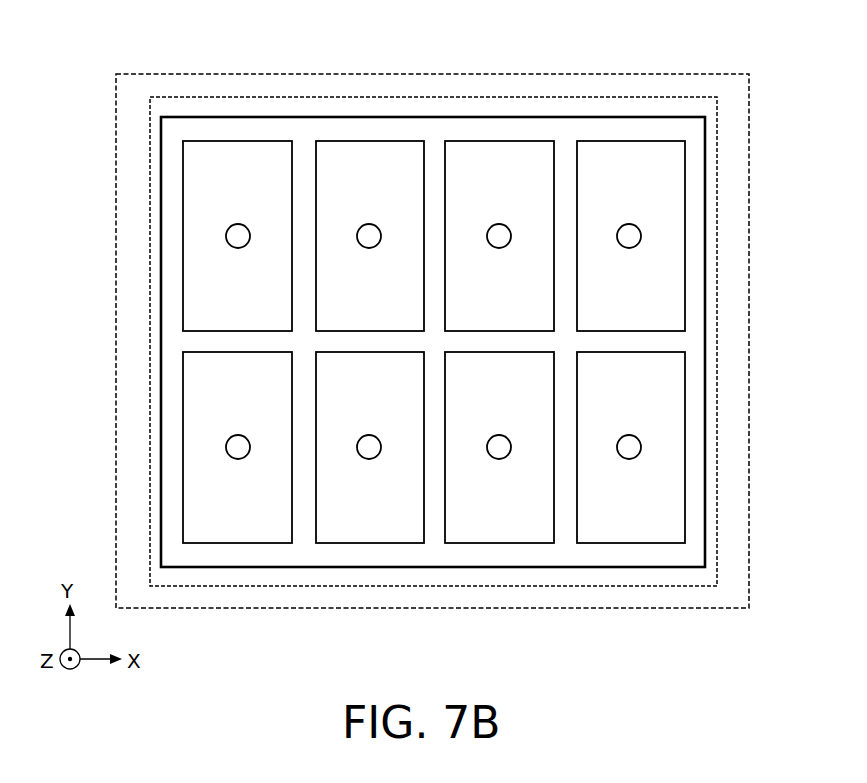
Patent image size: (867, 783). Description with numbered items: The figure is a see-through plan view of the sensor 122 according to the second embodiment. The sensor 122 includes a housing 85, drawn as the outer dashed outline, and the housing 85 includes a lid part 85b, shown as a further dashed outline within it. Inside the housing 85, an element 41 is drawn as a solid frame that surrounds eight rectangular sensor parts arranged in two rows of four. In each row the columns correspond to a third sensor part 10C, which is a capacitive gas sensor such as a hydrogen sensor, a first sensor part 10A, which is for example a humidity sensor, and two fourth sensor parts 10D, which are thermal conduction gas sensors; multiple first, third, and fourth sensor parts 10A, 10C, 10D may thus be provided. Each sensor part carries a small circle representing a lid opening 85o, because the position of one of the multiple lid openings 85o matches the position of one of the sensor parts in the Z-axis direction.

The sensor 122 is at (760, 73).
The lid part 85b is at (116, 124).
The housing 85 is at (116, 176).
The substrate 41 is at (160, 270).
The third sensor part 10C is at (263, 141).
The first sensor part 10A is at (387, 141).
The fourth sensor part 10D is at (512, 141).
The lid opening 85o is at (238, 224).